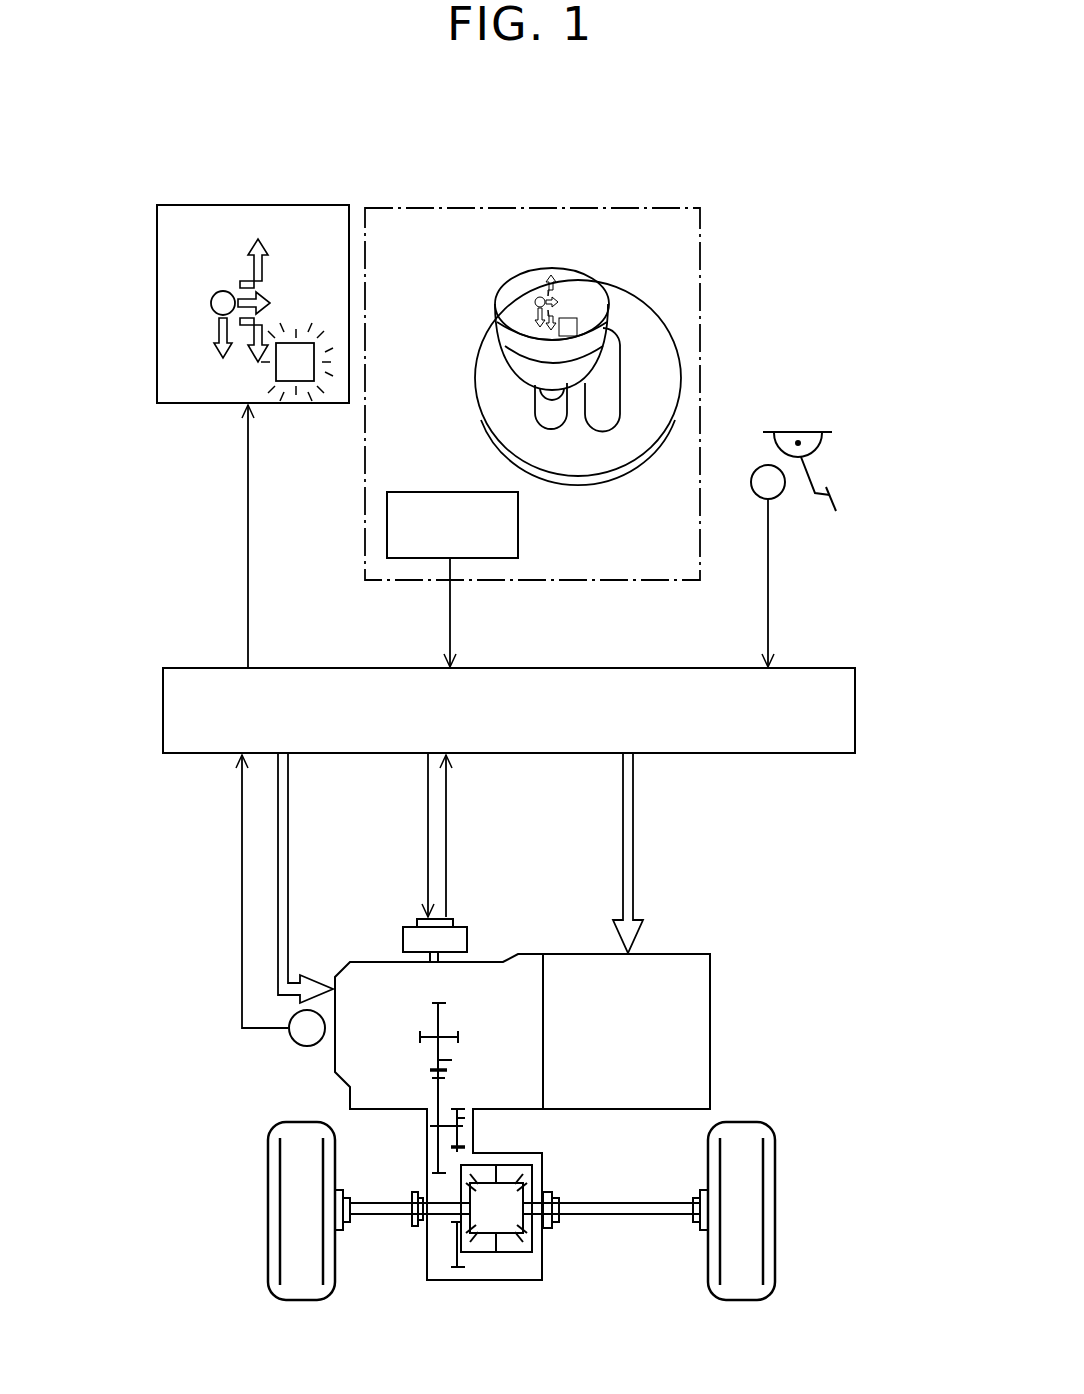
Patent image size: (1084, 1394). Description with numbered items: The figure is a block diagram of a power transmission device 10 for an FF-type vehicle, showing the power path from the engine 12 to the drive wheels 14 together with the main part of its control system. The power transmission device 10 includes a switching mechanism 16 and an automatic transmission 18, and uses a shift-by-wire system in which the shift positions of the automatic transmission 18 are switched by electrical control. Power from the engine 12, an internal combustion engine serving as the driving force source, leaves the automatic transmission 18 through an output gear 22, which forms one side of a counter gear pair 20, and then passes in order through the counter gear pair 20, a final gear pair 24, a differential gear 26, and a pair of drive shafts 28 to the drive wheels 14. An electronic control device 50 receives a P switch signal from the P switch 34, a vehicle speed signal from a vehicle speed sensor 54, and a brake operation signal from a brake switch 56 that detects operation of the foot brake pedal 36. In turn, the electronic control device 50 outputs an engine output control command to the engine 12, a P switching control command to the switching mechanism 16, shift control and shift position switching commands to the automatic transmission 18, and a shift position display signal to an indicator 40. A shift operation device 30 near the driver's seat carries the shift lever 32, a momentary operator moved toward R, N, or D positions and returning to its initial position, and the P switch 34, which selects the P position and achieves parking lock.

The power transmission device 10 is at (766, 122).
The engine 12 is at (683, 963).
The drive wheels 14 is at (302, 1128).
The switching mechanism 16 is at (460, 934).
The automatic transmission 18 is at (350, 980).
The counter gear pair 20 is at (414, 1065).
The output gear 22 is at (437, 1002).
The final gear pair 24 is at (485, 1138).
The differential gear 26 is at (524, 1273).
The drive shafts 28 is at (368, 1214).
The shift operation device 30 is at (655, 212).
The shift lever 32 is at (540, 268).
The P switch 34 is at (430, 496).
The foot brake pedal 36 is at (805, 508).
The indicator 40 is at (310, 213).
The electronic control device 50 is at (675, 670).
The vehicle speed sensor 54 is at (305, 1040).
The brake switch 56 is at (755, 480).